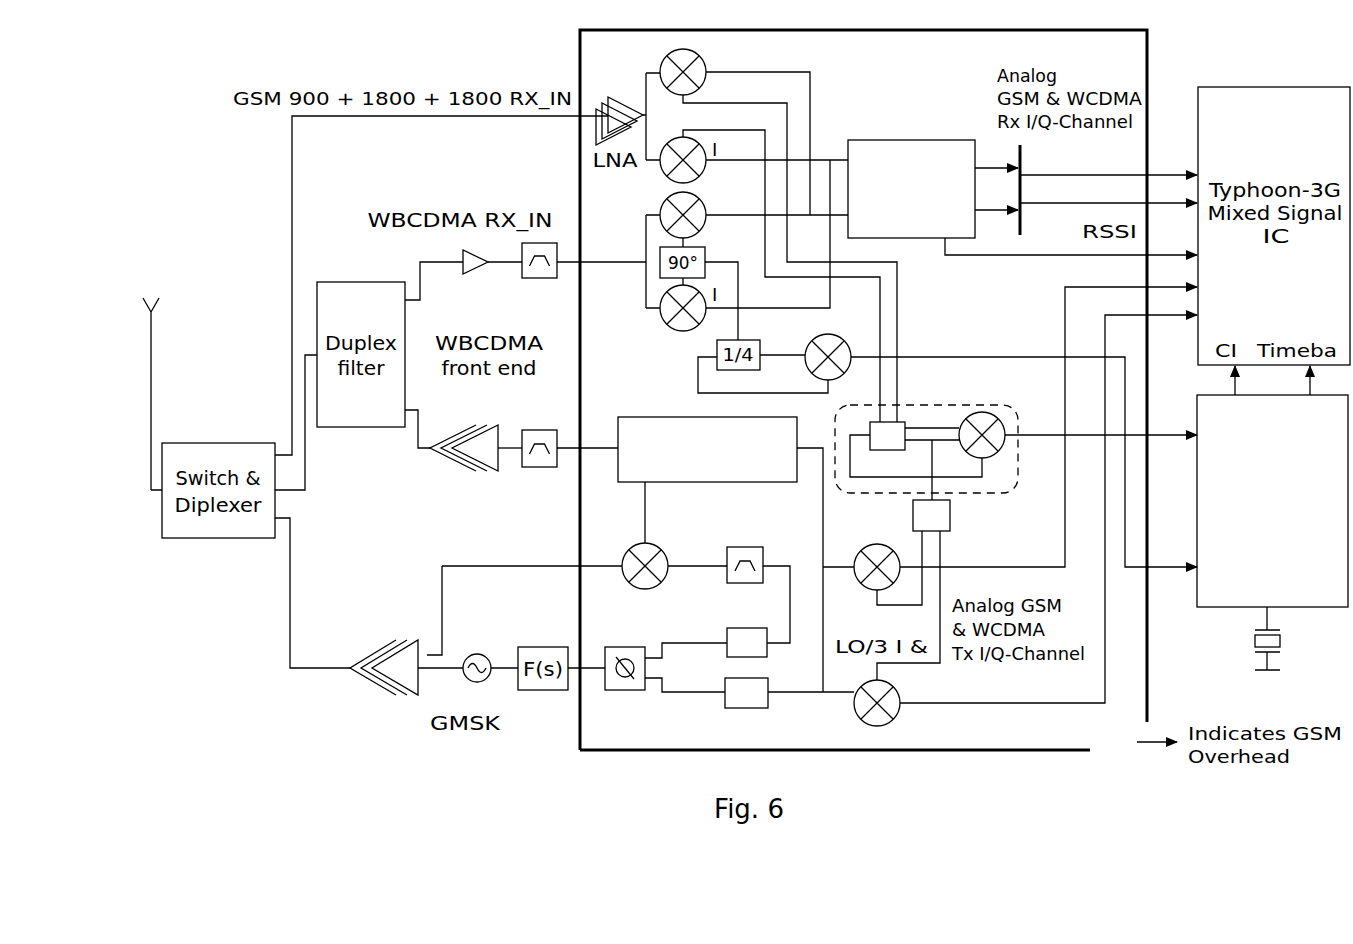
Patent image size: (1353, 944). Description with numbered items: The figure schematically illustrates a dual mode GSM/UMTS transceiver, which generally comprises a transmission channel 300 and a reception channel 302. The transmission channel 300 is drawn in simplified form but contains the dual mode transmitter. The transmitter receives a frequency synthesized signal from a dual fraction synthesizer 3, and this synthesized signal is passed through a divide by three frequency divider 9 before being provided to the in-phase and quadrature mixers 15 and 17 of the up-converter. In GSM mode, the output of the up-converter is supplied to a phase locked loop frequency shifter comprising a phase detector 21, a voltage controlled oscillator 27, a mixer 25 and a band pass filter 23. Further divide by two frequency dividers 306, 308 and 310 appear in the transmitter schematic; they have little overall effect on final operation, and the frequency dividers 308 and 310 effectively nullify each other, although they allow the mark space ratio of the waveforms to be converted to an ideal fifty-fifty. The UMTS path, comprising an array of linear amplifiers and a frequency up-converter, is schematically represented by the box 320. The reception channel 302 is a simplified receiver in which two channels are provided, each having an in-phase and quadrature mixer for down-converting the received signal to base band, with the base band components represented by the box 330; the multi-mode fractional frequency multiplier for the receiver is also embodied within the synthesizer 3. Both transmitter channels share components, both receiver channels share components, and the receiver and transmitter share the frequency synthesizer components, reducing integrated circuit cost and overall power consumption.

The synthesizer 3 is at (1300, 607).
The divide by three frequency divider 9 is at (1000, 490).
The in-phase mixer 15 is at (866, 548).
The quadrature mixer 17 is at (869, 725).
The phase detector 21 is at (623, 690).
The band pass filter 23 is at (742, 547).
The mixer 25 is at (658, 547).
The voltage controlled oscillator 27 is at (477, 654).
The transmission channel 300 is at (595, 730).
The reception channel 302 is at (913, 52).
The divide by two frequency divider 306 is at (950, 531).
The divide by two frequency divider 308 is at (745, 628).
The divide by two frequency divider 310 is at (745, 708).
The box 320 is at (657, 415).
The box 330 is at (870, 140).